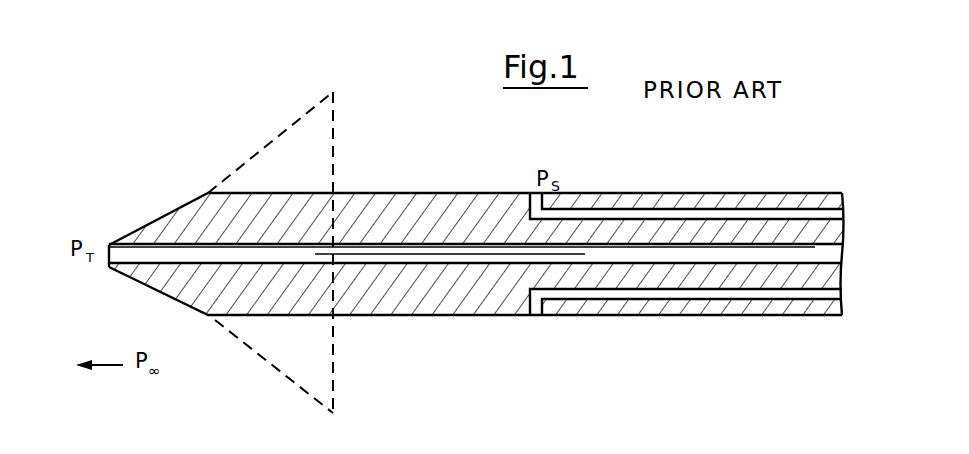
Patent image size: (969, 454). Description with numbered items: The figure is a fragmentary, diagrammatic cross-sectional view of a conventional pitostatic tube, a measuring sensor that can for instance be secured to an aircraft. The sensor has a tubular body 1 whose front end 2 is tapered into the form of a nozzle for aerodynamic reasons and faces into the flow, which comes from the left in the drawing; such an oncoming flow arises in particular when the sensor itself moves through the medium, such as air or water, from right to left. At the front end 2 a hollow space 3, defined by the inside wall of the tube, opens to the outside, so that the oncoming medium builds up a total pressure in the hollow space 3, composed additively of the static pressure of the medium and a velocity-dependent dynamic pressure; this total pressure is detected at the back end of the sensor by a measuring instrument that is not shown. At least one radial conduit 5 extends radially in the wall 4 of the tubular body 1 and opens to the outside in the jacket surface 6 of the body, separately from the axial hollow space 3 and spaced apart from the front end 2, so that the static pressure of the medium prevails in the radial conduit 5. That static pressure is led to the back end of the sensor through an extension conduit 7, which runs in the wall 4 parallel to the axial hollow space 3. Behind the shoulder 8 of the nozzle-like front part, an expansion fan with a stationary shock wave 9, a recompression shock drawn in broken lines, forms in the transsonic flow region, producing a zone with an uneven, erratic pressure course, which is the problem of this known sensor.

The tubular body 1 is at (462, 252).
The front end 2 is at (108, 267).
The hollow space 3 is at (157, 255).
The wall 4 is at (433, 210).
The radial conduit 5 is at (533, 192).
The jacket surface 6 is at (623, 192).
The extension conduit 7 is at (698, 208).
The shoulder 8 is at (208, 192).
The stationary shock wave 9 is at (334, 151).